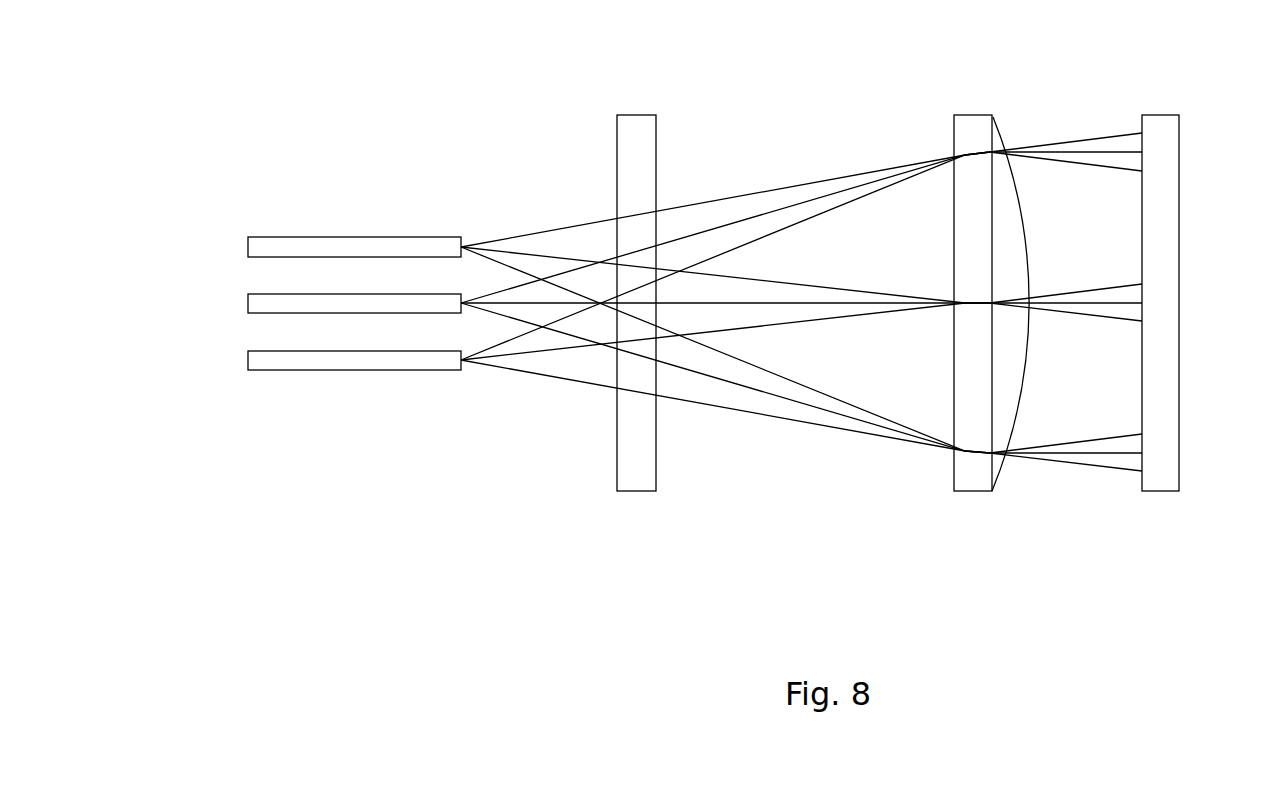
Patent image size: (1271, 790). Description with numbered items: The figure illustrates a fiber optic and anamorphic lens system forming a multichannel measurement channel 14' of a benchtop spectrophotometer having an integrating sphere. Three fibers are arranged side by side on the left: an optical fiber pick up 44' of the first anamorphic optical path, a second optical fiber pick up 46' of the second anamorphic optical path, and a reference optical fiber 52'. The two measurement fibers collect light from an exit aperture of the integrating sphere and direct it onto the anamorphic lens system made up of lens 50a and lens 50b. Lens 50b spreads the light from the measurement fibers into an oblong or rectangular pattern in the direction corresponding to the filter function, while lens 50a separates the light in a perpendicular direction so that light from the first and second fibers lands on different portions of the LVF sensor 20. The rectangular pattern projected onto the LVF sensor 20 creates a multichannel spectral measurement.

The multichannel measurement channel 14' is at (801, 249).
The optical fiber pick up 44' is at (335, 217).
The second optical fiber pick up 46' is at (323, 278).
The reference optical fiber 52' is at (323, 335).
The lens 50a is at (637, 115).
The lens 50b is at (973, 115).
The LVF sensor 20 is at (1160, 115).